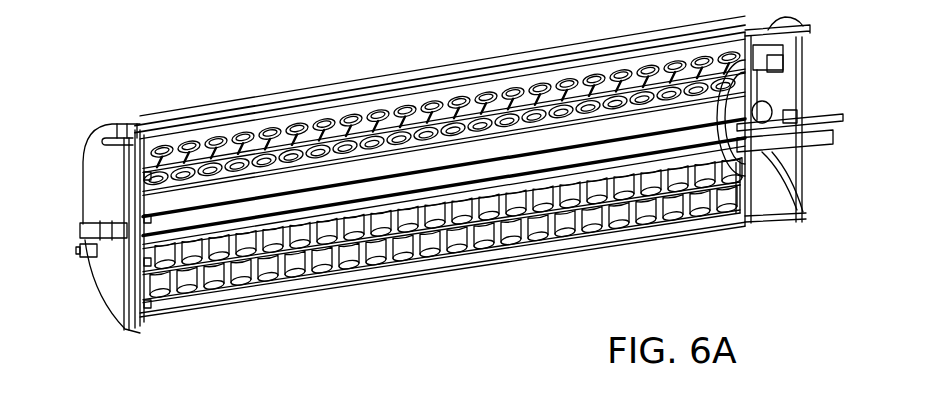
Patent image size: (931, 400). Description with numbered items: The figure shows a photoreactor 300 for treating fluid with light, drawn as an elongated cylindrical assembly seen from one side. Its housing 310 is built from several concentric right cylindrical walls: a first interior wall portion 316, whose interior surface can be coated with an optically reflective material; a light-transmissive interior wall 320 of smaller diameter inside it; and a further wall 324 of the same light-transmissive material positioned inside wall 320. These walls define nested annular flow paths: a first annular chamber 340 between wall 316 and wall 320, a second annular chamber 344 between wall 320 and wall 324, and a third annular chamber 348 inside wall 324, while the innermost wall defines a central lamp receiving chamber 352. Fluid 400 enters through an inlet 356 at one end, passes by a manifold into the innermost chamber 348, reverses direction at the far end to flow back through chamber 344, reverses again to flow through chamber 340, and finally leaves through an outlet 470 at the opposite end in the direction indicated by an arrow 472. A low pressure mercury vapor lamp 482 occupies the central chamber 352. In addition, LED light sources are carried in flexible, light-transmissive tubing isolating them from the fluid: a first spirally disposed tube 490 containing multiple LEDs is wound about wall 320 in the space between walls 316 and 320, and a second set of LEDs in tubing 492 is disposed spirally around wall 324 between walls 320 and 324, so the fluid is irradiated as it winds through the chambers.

The photoreactor 300 is at (238, 353).
The housing 310 is at (485, 285).
The first interior wall portion 316 is at (517, 251).
The interior wall 320 is at (432, 244).
The wall 324 is at (302, 258).
The first annular chamber 340 is at (712, 213).
The second annular chamber 344 is at (596, 204).
The third annular chamber 348 is at (628, 173).
The lamp receiving chamber 352 is at (652, 134).
The inlet 356 is at (808, 220).
The fluid 400 is at (838, 140).
The outlet 470 is at (84, 226).
The arrow 472 is at (67, 242).
The low pressure mercury vapor lamp 482 is at (452, 182).
The first spirally disposed tube 490 is at (382, 246).
The tubing 492 is at (345, 247).